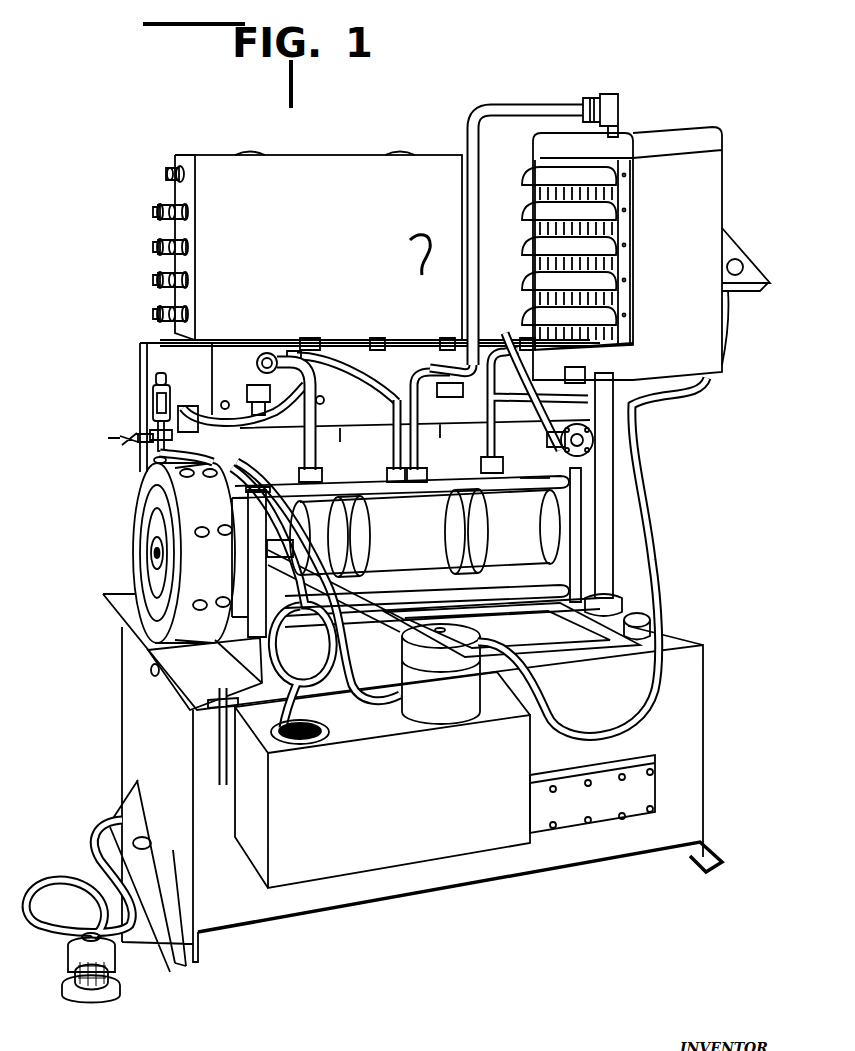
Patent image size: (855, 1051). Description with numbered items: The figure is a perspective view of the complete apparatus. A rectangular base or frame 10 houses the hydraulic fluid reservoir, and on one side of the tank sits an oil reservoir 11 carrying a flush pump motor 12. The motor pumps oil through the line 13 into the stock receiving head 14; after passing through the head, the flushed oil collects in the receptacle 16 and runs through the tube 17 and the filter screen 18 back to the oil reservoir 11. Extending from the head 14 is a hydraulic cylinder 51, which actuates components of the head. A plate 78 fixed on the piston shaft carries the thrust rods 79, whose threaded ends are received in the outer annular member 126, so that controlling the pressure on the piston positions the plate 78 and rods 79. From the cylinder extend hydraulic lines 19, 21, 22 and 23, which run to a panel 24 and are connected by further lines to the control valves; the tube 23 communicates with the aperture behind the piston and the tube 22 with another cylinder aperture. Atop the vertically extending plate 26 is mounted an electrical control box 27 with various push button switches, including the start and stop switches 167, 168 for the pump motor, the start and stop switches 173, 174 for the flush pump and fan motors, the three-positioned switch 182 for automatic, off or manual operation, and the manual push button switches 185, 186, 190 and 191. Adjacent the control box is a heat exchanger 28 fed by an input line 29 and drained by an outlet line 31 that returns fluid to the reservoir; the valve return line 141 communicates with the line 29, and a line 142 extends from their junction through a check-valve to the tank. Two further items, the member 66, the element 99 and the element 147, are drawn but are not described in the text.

The rectangular base or frame 10 is at (108, 734).
The oil reservoir 11 is at (380, 855).
The flush pump motor 12 is at (455, 688).
The line 13 is at (322, 680).
The stock receiving head 14 is at (116, 545).
The receptacle 16 is at (182, 672).
The tube 17 is at (274, 752).
The filter screen 18 is at (308, 745).
The hydraulic line 19 is at (306, 437).
The hydraulic line 21 is at (398, 430).
The hydraulic line 22 is at (387, 405).
The hydraulic line 23 is at (480, 430).
The panel 24 is at (248, 384).
The vertically extending plate 26 is at (148, 376).
The electrical control box 27 is at (337, 166).
The heat exchanger 28 is at (676, 147).
The input line 29 is at (502, 106).
The outlet line 31 is at (606, 540).
The hydraulic cylinder 51 is at (424, 546).
The cylinder support rail 66 is at (480, 528).
The plate 78 is at (583, 498).
The thrust rods 79 is at (448, 476).
The drum face plate 99 is at (252, 554).
The outer annular member 126 is at (172, 487).
The return line 141 is at (443, 375).
The line 142 is at (520, 348).
The foot pedal 147 is at (70, 962).
The start push button switch 167 is at (155, 210).
The stop push button switch 168 is at (165, 205).
The push button start switch 173 is at (155, 247).
The push button stop switch 174 is at (168, 242).
The three-positioned switch 182 is at (170, 159).
The manual push button switch 185 is at (155, 281).
The manual push button switch 186 is at (168, 278).
The manually operated push button switch 190 is at (155, 316).
The manually operated push button switch 191 is at (168, 310).